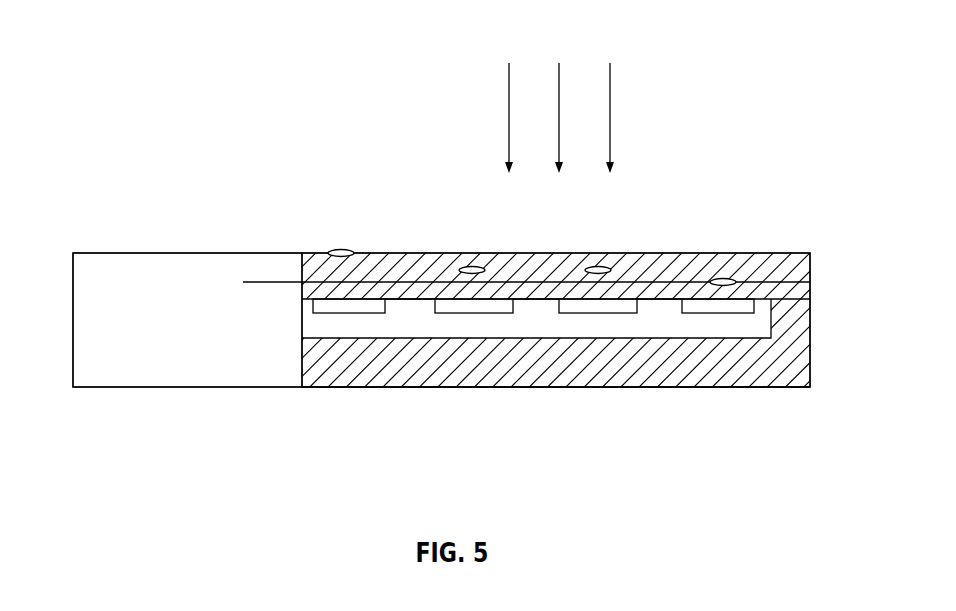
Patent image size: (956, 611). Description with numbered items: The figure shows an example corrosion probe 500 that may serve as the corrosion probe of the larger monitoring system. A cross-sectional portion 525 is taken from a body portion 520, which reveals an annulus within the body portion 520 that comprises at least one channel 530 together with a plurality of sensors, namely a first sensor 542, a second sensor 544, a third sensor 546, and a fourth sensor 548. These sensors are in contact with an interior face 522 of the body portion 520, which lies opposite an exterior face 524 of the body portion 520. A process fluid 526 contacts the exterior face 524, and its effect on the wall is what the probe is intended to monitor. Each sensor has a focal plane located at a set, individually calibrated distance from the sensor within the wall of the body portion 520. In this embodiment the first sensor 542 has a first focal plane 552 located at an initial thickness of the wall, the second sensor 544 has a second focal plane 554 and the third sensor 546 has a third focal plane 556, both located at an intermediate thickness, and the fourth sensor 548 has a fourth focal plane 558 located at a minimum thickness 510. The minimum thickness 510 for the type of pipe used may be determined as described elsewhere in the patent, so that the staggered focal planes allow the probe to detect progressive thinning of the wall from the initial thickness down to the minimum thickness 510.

The corrosion probe 500 is at (512, 474).
The minimum thickness 510 is at (258, 280).
The body portion 520 is at (152, 285).
The interior face 522 is at (410, 300).
The exterior face 524 is at (370, 298).
The cross-sectional portion 525 is at (658, 387).
The process fluid 526 is at (634, 139).
The channel 530 is at (345, 323).
The first sensor 542 is at (388, 298).
The second sensor 544 is at (500, 299).
The third sensor 546 is at (625, 299).
The fourth sensor 548 is at (693, 228).
The first focal plane 552 is at (342, 249).
The second focal plane 554 is at (471, 266).
The third focal plane 556 is at (600, 266).
The fourth focal plane 558 is at (729, 278).